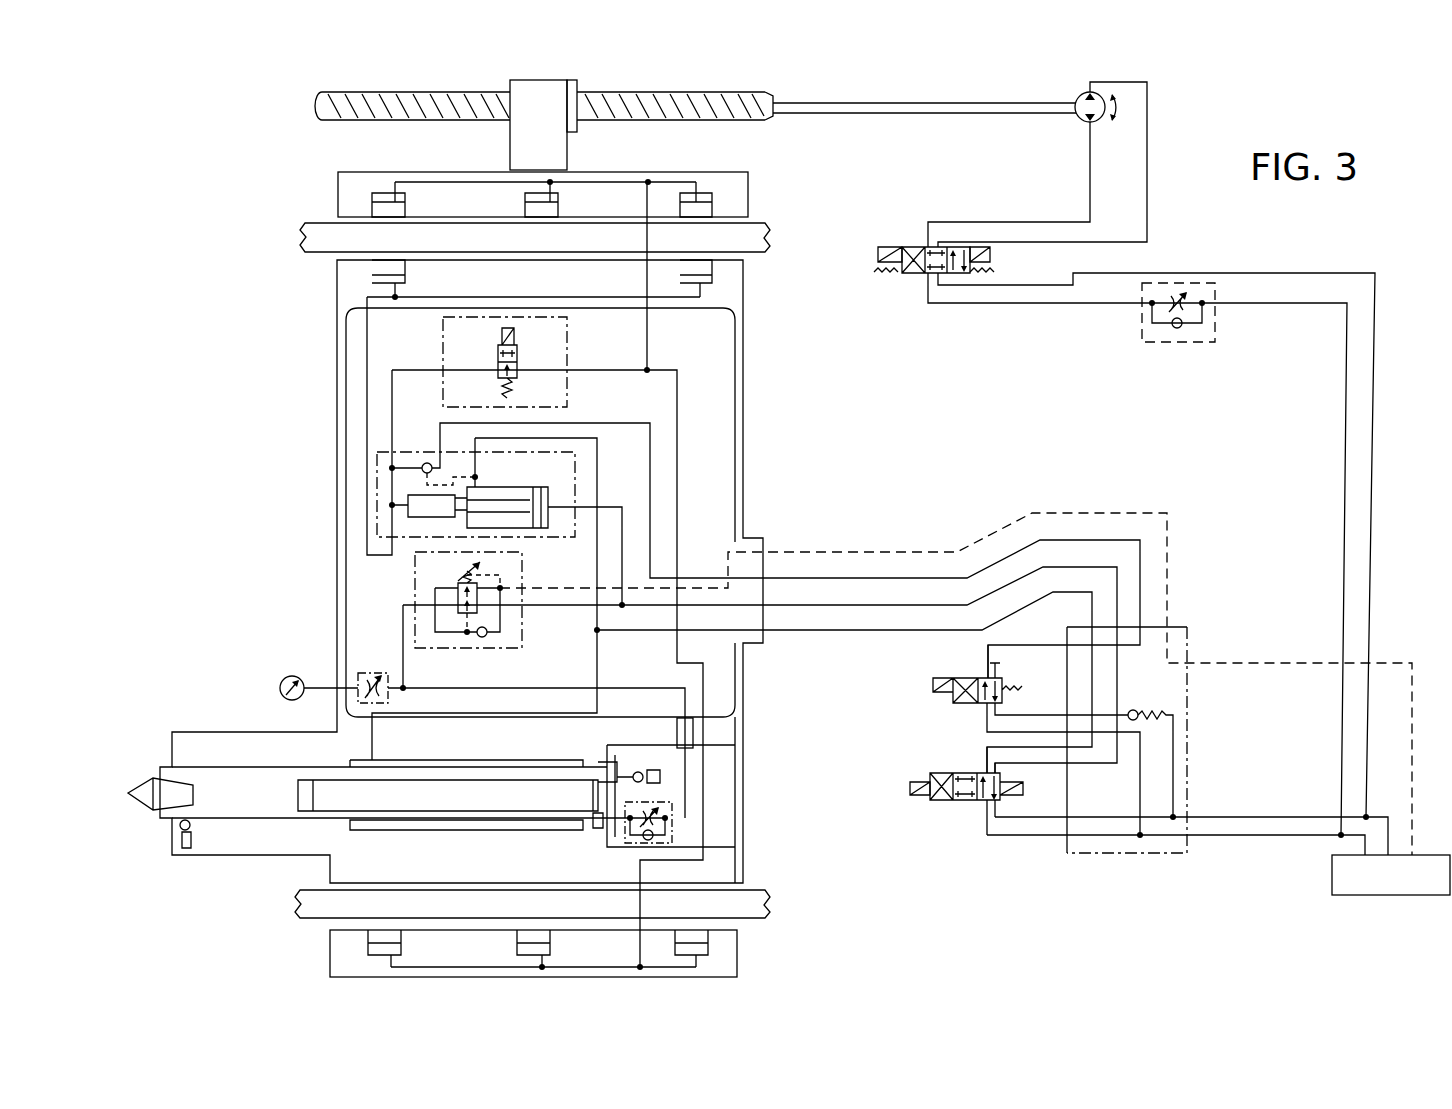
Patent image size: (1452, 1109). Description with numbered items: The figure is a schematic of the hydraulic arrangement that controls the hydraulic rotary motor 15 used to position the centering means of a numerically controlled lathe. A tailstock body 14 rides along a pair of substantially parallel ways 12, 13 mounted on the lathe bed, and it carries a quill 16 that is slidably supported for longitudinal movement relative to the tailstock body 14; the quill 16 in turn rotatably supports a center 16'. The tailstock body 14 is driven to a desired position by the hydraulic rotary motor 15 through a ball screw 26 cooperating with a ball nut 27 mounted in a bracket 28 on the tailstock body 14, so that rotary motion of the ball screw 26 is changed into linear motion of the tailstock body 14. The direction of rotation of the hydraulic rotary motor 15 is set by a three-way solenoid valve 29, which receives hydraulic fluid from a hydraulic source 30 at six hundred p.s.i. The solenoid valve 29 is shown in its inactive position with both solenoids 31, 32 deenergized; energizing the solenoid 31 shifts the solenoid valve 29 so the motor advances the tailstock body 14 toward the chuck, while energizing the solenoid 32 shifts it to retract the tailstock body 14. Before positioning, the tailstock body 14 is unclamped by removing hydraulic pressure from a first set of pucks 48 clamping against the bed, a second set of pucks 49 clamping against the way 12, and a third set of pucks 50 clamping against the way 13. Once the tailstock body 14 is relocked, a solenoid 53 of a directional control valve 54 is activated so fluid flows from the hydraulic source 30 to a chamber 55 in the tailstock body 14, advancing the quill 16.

The way 12 is at (322, 222).
The way 13 is at (748, 920).
The tailstock body 14 is at (337, 290).
The hydraulic rotary motor 15 is at (1077, 118).
The quill 16 is at (416, 764).
The center 16' is at (148, 815).
The ball screw 26 is at (720, 119).
The ball nut 27 is at (577, 133).
The bracket 28 is at (508, 141).
The three-way solenoid valve 29 is at (912, 277).
The hydraulic source 30 is at (1379, 895).
The solenoid 31 is at (893, 245).
The solenoid 32 is at (985, 246).
The first set of pucks 48 is at (405, 276).
The second set of pucks 49 is at (405, 212).
The third set of pucks 50 is at (400, 946).
The solenoid 53 is at (915, 798).
The directional control valve 54 is at (955, 802).
The chamber 55 is at (584, 824).